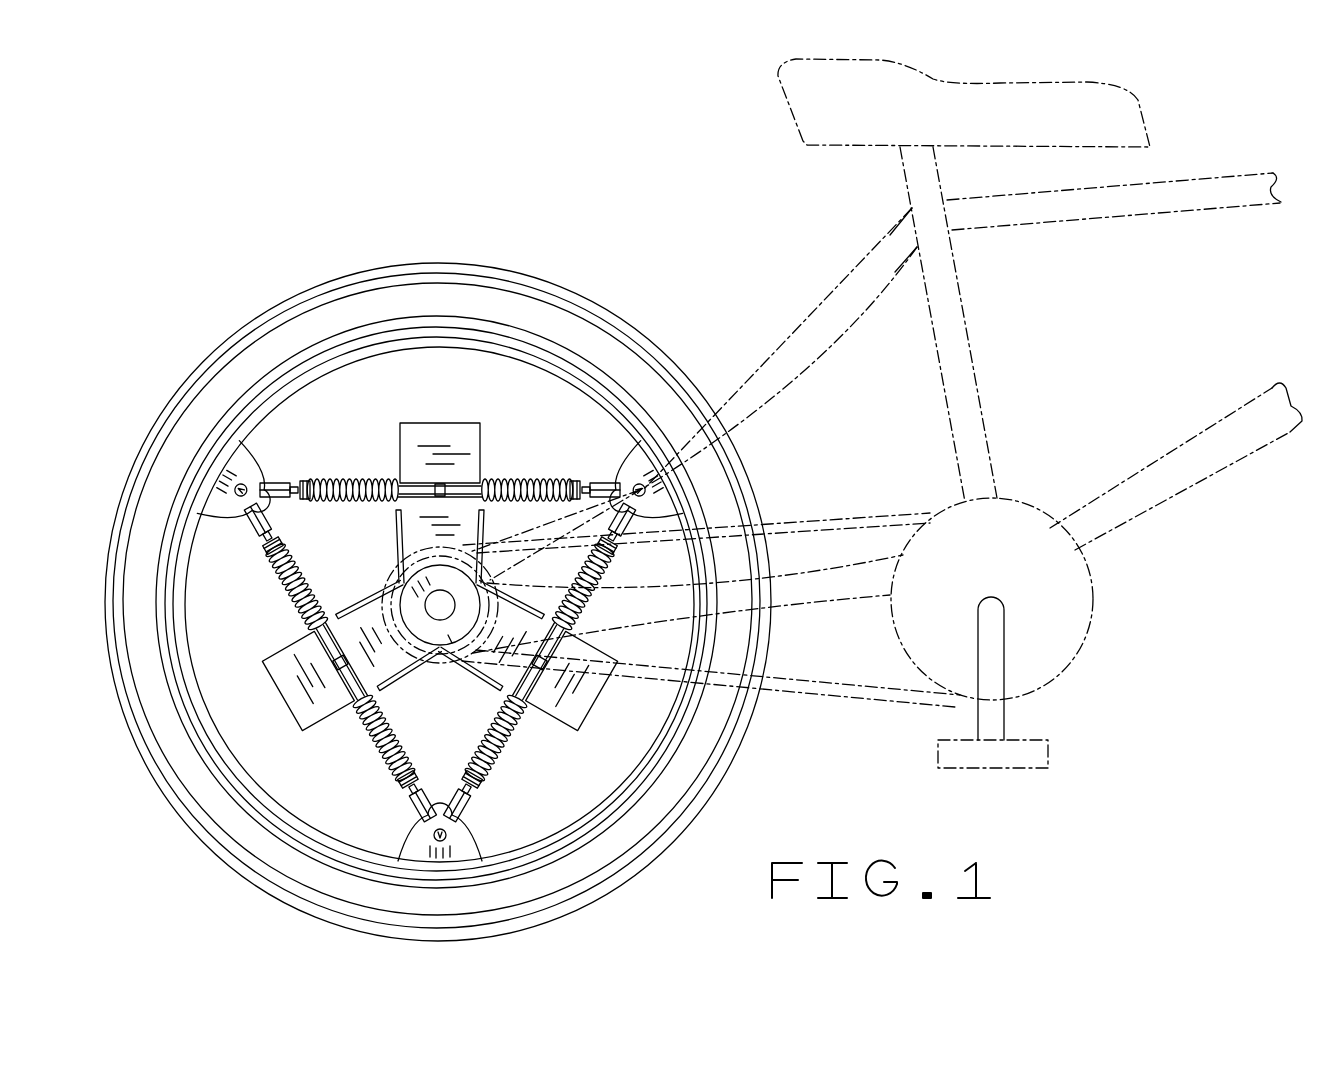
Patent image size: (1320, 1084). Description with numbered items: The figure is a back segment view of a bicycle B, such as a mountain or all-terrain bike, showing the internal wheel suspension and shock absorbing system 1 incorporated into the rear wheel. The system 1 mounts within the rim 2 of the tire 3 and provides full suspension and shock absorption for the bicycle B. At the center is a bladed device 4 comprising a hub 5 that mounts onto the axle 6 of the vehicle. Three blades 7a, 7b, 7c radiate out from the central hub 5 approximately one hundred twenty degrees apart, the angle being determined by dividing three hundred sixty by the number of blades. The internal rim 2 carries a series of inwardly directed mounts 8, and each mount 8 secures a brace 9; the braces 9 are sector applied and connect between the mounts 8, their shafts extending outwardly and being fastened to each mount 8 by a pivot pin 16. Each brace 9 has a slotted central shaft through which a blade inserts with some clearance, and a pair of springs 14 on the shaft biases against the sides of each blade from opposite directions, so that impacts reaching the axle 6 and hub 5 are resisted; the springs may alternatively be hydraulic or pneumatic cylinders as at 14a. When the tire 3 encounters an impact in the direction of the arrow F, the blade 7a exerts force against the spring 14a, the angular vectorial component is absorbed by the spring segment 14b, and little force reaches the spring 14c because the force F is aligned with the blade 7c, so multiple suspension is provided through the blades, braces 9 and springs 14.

The internal wheel suspension and shock absorbing system 1 is at (451, 566).
The rim 2 is at (427, 347).
The tire 3 is at (317, 327).
The bladed device 4 is at (415, 604).
The hub 5 is at (440, 640).
The axle 6 is at (485, 563).
The blade 7a is at (441, 477).
The blade 7b is at (341, 656).
The blade 7c is at (539, 656).
The mount 8 is at (439, 640).
The brace 9 is at (440, 599).
The spring 14 is at (440, 546).
The spring 14a is at (440, 509).
The spring segment 14b is at (322, 662).
The spring 14c is at (559, 662).
The pivot pin 16 is at (429, 661).
The bicycle B is at (833, 322).
The force F is at (438, 573).